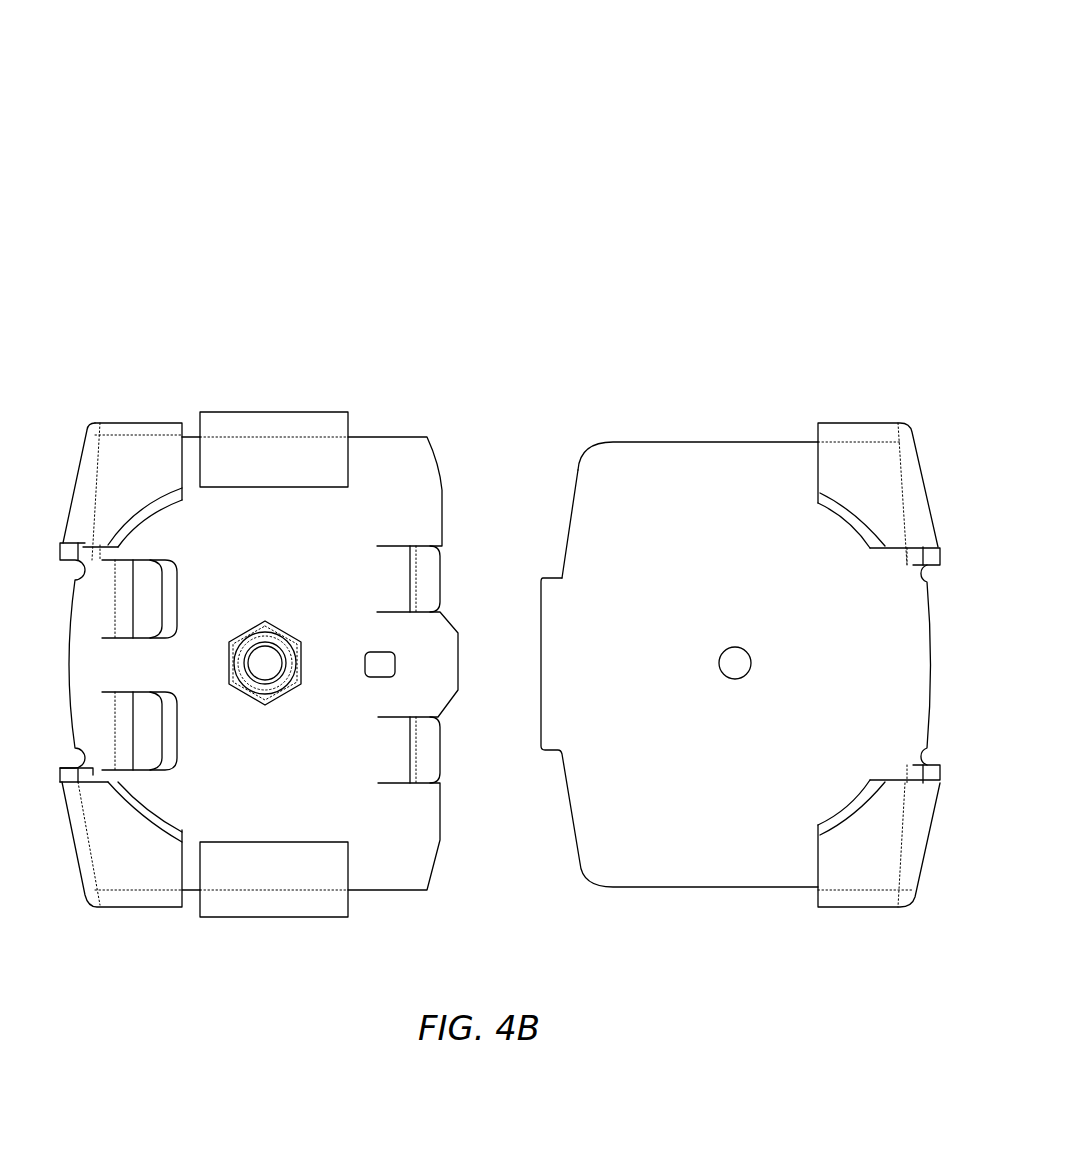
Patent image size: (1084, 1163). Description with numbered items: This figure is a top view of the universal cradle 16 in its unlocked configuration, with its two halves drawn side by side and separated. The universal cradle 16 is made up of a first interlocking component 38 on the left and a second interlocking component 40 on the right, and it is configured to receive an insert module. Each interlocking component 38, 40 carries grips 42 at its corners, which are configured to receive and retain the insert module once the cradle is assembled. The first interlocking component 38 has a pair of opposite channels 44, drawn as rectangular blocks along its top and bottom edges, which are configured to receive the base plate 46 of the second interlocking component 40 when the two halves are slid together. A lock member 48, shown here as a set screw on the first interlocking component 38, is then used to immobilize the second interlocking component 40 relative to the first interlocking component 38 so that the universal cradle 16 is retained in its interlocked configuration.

The universal cradle 16 is at (514, 166).
The first interlocking component 38 is at (240, 318).
The second interlocking component 40 is at (744, 354).
The grips 42 is at (134, 484).
The channels 44 is at (348, 462).
The base plate 46 is at (575, 483).
The lock member 48 is at (290, 637).